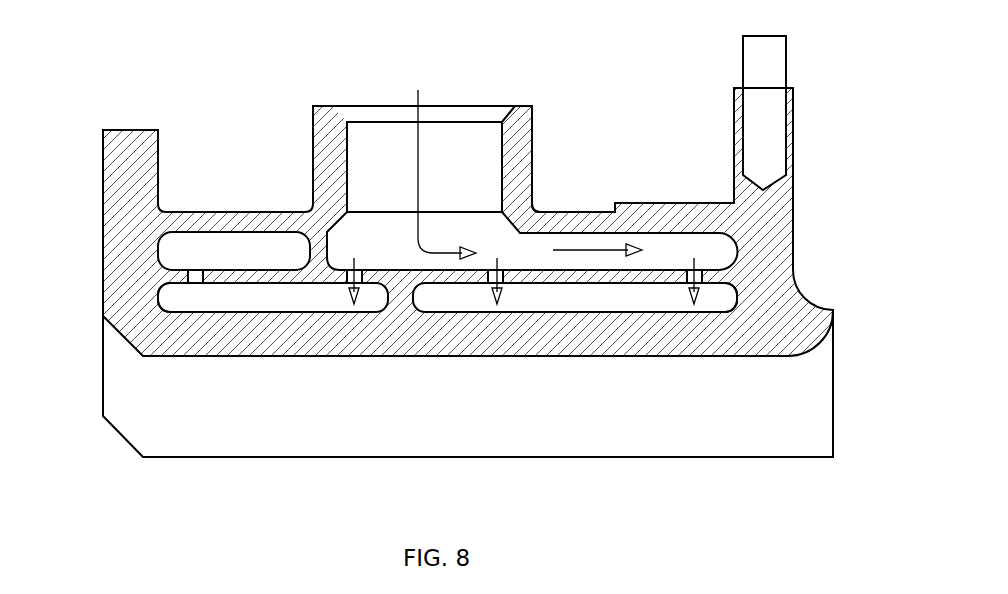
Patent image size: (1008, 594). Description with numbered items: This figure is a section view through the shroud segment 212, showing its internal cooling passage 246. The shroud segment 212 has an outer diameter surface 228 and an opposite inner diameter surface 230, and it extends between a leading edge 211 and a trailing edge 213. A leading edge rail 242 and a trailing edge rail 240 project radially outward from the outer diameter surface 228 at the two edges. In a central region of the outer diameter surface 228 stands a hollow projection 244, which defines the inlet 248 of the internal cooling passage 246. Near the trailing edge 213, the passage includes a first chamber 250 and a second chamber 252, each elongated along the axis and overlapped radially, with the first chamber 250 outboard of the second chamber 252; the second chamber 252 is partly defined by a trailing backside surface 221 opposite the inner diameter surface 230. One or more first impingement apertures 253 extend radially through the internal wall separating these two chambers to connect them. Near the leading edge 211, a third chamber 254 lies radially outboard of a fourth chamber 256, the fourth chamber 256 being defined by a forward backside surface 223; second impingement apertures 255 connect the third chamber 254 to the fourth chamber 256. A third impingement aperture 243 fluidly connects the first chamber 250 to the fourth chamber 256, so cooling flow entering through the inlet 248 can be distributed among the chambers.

The leading edge 211 is at (103, 222).
The shroud segment 212 is at (205, 114).
The trailing edge 213 is at (833, 363).
The trailing backside surface 221 is at (667, 312).
The forward backside surface 223 is at (320, 302).
The outer diameter surface 228 is at (257, 213).
The inner diameter surface 230 is at (528, 357).
The trailing edge rail 240 is at (788, 192).
The leading edge rail 242 is at (103, 145).
The third impingement aperture 243 is at (360, 278).
The projection 244 is at (533, 165).
The internal cooling passage 246 is at (372, 99).
The inlet 248 is at (500, 128).
The first chamber 250 is at (738, 255).
The second chamber 252 is at (740, 293).
The first impingement apertures 253 is at (507, 278).
The third chamber 254 is at (182, 232).
The second impingement apertures 255 is at (203, 281).
The fourth chamber 256 is at (158, 300).